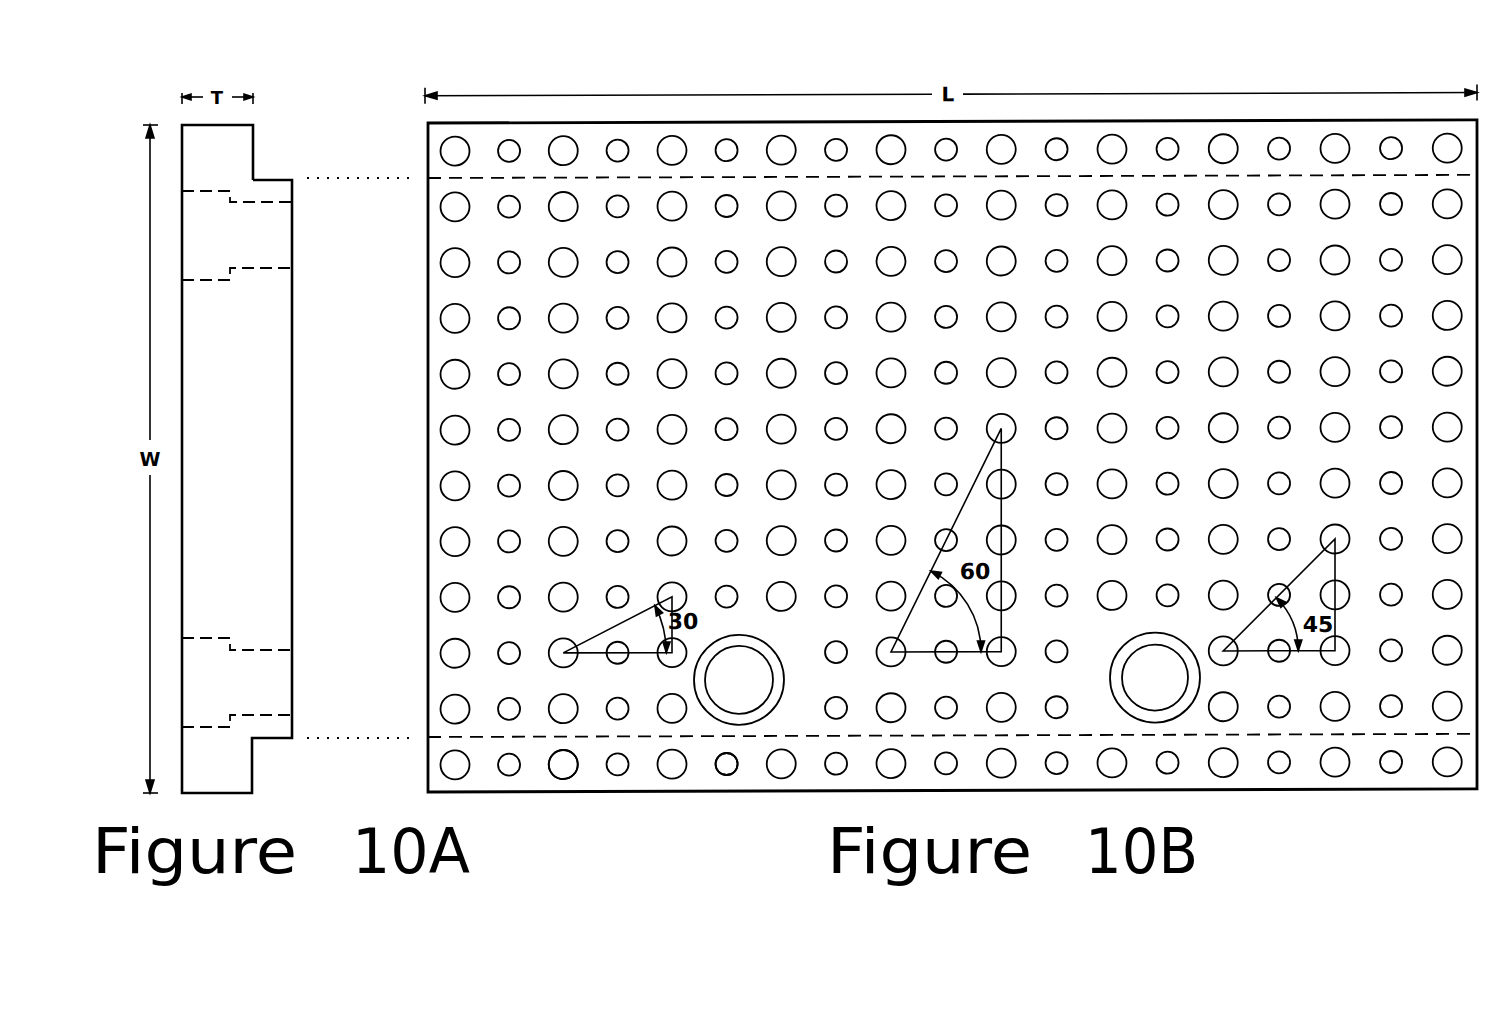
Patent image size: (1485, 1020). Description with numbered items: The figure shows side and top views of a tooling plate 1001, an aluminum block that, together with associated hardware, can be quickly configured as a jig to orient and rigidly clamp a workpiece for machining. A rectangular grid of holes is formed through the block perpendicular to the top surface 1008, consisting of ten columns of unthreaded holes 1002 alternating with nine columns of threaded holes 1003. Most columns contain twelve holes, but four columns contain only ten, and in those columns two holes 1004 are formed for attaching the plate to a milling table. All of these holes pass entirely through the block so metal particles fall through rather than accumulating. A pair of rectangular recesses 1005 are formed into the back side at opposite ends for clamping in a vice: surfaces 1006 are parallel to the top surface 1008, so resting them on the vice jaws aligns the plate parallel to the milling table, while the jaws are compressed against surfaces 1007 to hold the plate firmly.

In FIG. 10B, the tooling plate 1001 is at (378, 136).
In FIG. 10B, the unthreaded holes 1002 is at (563, 775).
In FIG. 10B, the threaded holes 1003 is at (728, 775).
In FIG. 10B, the holes for attaching to milling table 1004 is at (1127, 666).
In FIG. 10A, the rectangular recesses 1005 is at (265, 163).
In FIG. 10A, the surfaces parallel to top surface 1006 is at (252, 767).
In FIG. 10A, the clamping surfaces 1007 is at (272, 738).
In FIG. 10A, the top surface 1008 is at (182, 138).